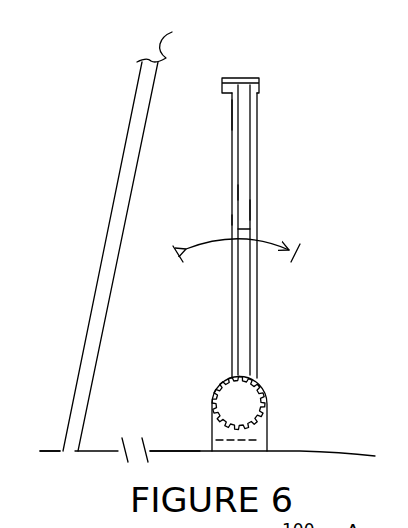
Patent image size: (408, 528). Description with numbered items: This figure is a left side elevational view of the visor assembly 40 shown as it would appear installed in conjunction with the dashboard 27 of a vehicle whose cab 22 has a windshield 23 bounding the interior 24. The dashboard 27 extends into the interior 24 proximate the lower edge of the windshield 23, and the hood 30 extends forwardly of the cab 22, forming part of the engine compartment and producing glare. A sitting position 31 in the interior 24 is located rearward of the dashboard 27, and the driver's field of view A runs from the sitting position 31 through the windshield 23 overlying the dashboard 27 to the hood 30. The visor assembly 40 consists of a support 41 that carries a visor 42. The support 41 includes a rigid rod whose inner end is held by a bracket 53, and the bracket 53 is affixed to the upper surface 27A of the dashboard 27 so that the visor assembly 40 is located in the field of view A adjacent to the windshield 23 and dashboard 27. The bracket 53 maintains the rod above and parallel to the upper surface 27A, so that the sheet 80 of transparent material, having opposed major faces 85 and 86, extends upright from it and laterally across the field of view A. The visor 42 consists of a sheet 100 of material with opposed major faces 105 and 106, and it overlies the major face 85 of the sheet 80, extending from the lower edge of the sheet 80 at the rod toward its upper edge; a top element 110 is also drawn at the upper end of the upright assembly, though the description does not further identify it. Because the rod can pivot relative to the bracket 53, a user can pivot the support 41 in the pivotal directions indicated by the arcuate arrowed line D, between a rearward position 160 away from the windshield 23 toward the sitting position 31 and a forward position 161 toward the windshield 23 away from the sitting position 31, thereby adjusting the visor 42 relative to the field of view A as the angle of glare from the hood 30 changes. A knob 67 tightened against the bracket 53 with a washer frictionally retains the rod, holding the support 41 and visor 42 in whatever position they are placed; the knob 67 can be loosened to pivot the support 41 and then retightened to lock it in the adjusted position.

The cab 22 is at (169, 41).
The windshield 23 is at (110, 214).
The interior 24 is at (356, 341).
The dashboard 27 is at (316, 451).
The upper surface 27A is at (171, 451).
The hood 30 is at (48, 451).
The sitting position 31 is at (380, 161).
The visor assembly 40 is at (250, 198).
The support 41 is at (228, 172).
The visor 42 is at (259, 173).
The bracket 53 is at (263, 441).
The knob 67 is at (244, 406).
The sheet 80 is at (232, 114).
The major face 85 is at (251, 229).
The major face 86 is at (232, 222).
The sheet 100 is at (257, 122).
The major face 105 is at (251, 210).
The major face 106 is at (238, 193).
The post cap 110 is at (221, 78).
The rearward position 160 is at (296, 256).
The forward position 161 is at (180, 258).
The pivotal directions D is at (216, 247).
The field of view A is at (319, 120).